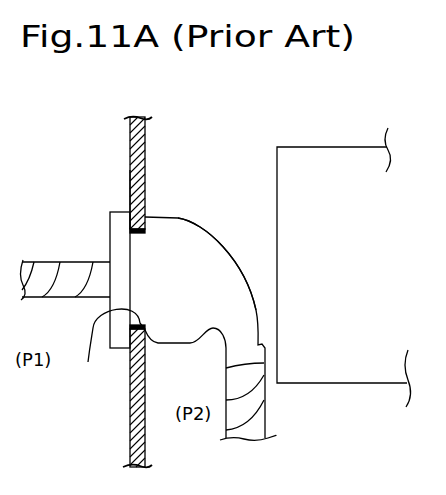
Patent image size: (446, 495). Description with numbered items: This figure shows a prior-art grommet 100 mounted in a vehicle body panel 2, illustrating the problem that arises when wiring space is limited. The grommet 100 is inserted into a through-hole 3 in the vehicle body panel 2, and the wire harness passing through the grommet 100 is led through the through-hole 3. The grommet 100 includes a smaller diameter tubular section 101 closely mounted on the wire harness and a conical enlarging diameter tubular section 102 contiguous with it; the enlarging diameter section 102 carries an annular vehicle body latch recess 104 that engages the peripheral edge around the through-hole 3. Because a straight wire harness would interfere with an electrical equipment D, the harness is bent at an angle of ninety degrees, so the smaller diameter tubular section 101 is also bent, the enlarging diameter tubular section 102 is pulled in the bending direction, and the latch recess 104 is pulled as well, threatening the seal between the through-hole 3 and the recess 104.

The vehicle body panel 2 is at (130, 143).
The through-hole 3 is at (130, 191).
The grommet 100 is at (172, 218).
The smaller diameter tubular section 101 is at (266, 348).
The enlarging diameter tubular section 102 is at (197, 228).
The vehicle body latch recess 104 is at (88, 362).
The electrical equipment D is at (313, 168).